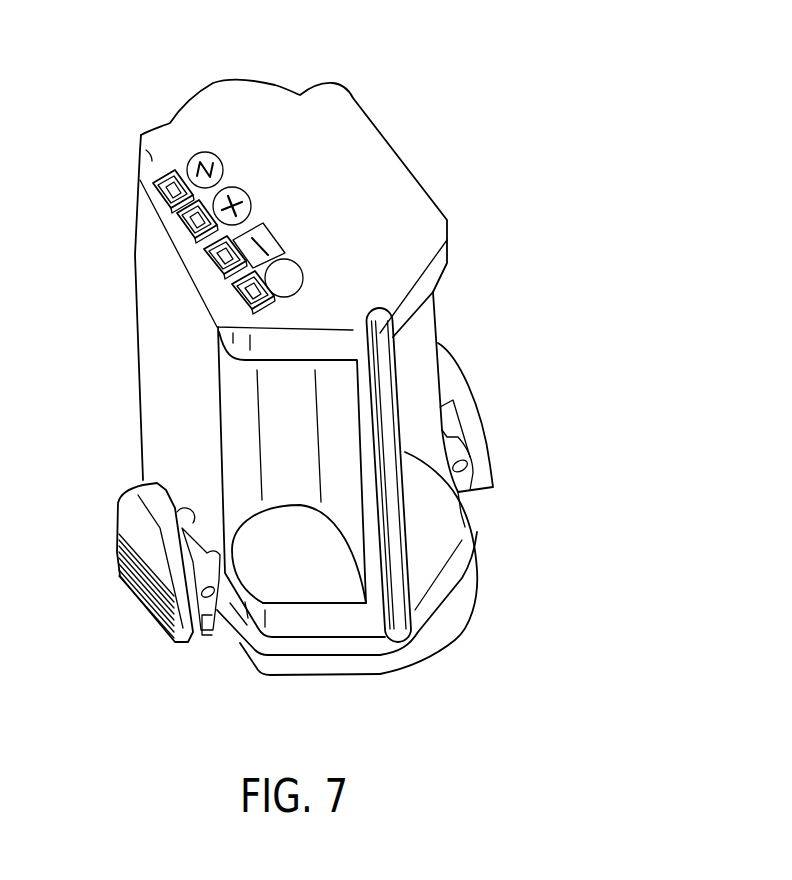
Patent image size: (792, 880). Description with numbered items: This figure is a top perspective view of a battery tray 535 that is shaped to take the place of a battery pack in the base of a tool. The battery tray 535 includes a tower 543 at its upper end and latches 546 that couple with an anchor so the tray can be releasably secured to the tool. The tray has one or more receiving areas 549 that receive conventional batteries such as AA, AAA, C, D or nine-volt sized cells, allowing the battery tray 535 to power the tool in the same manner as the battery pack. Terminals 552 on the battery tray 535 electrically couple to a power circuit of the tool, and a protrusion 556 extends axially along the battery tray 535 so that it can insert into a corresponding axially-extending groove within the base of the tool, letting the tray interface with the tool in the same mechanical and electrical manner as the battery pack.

The battery tray 535 is at (674, 139).
The tower 543 is at (296, 127).
The terminals 552 is at (147, 165).
The protrusion 556 is at (383, 348).
The latches 546 is at (143, 533).
The receiving areas 549 is at (278, 562).